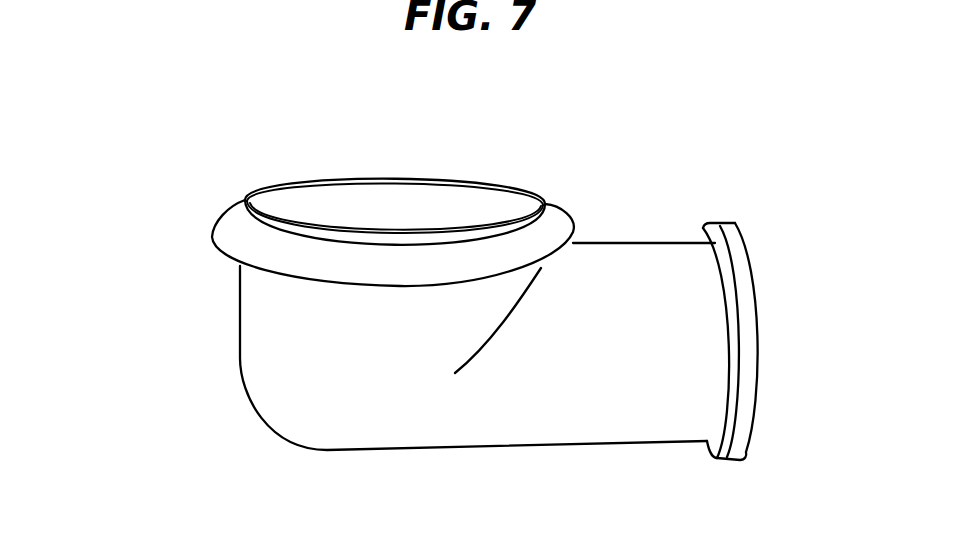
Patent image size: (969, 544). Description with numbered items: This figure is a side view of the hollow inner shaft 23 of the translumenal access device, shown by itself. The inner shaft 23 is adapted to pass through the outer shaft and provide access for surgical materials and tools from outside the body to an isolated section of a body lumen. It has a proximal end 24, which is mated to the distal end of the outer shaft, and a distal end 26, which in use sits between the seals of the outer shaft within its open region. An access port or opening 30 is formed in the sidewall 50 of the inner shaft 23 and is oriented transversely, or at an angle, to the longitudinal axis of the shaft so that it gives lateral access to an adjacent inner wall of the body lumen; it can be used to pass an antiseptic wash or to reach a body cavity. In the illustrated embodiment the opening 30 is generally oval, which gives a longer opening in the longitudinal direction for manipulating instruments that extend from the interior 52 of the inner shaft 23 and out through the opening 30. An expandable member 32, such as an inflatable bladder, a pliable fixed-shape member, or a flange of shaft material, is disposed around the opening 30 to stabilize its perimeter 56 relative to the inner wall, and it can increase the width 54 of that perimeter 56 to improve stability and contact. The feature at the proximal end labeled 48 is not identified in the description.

The inner shaft 23 is at (139, 157).
The proximal end 24 is at (750, 446).
The distal end 26 is at (253, 403).
The opening 30 is at (382, 207).
The expandable member 32 is at (230, 240).
The flange ring 48 is at (727, 221).
The sidewall 50 is at (632, 243).
The interior 52 is at (797, 341).
The width 54 is at (207, 177).
The perimeter 56 is at (517, 184).